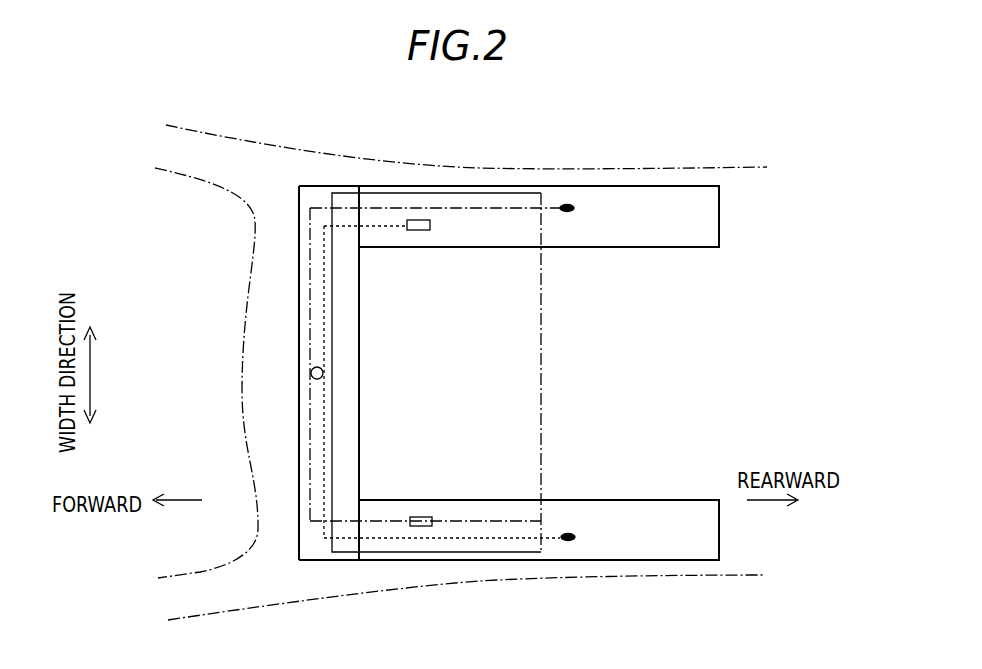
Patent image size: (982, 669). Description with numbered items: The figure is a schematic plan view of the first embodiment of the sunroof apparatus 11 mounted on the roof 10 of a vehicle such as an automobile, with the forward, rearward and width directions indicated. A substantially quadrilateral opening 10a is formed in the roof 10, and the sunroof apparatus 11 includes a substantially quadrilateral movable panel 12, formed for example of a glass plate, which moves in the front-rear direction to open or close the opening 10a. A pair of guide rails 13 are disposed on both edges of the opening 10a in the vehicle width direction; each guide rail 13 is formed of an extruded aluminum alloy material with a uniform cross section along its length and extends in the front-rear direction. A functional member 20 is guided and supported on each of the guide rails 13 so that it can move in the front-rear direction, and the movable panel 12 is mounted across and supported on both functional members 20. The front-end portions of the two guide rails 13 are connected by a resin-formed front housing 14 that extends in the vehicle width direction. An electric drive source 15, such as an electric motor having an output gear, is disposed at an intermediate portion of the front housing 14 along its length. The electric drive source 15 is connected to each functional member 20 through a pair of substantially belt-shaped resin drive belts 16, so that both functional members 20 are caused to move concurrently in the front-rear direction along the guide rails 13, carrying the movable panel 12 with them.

The roof 10 is at (540, 581).
The opening 10a is at (466, 363).
The sunroof apparatus 11 is at (646, 158).
The movable panel 12 is at (541, 372).
The guide rail 13 is at (497, 185).
The front housing 14 is at (298, 192).
The electric drive source 15 is at (311, 377).
The drive belt 16 is at (300, 446).
The functional member 20 is at (420, 231).